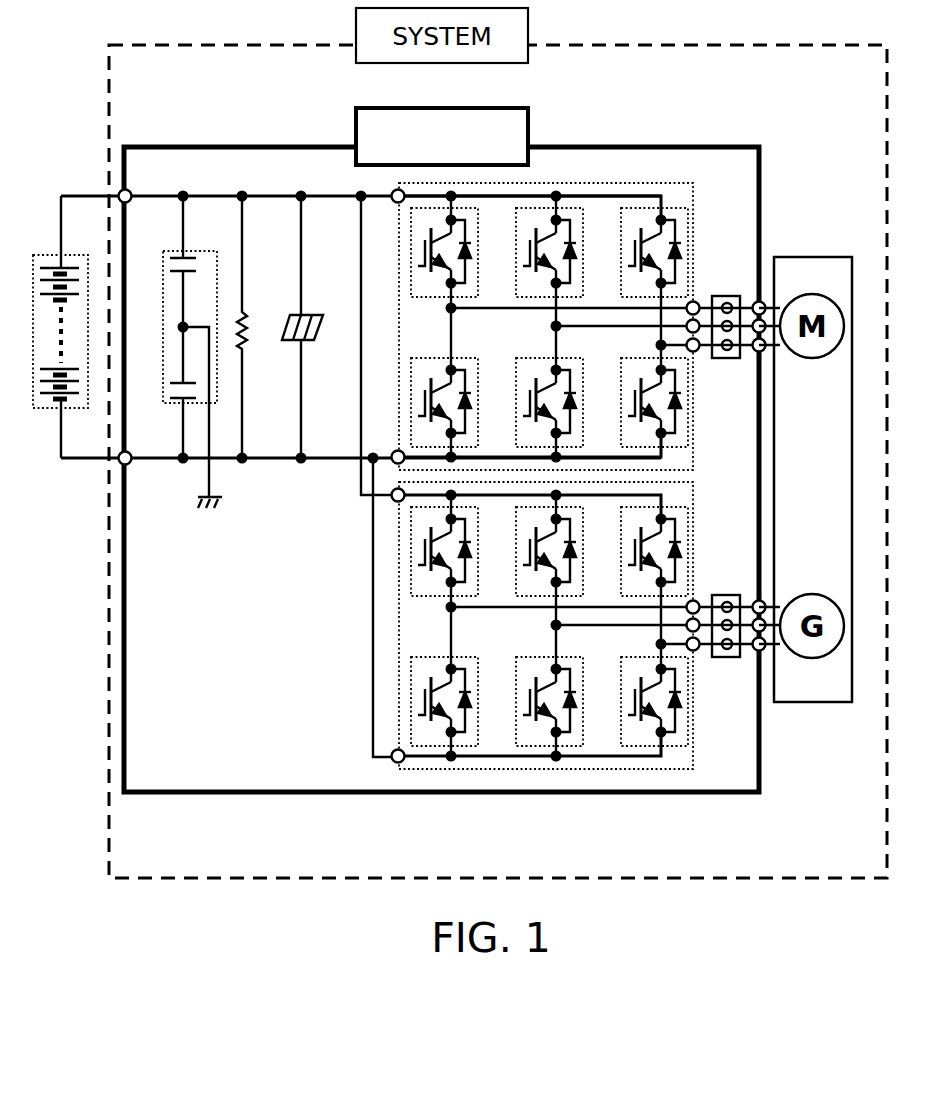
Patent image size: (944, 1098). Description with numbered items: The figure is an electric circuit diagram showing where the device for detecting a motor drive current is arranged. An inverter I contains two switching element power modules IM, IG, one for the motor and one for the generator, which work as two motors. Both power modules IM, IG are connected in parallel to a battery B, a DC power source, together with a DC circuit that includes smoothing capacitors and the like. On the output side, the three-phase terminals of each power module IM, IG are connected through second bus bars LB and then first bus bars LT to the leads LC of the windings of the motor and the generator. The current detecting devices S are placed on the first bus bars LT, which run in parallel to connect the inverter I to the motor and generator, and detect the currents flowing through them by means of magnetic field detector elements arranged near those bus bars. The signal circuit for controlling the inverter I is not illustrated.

The battery B is at (53, 253).
The inverter I is at (560, 155).
The switching element power module IM is at (627, 183).
The switching element power module IG is at (603, 770).
The current detecting device S is at (738, 288).
The second bus bar LB is at (698, 301).
The first bus bar LT is at (748, 353).
The lead LC is at (768, 300).